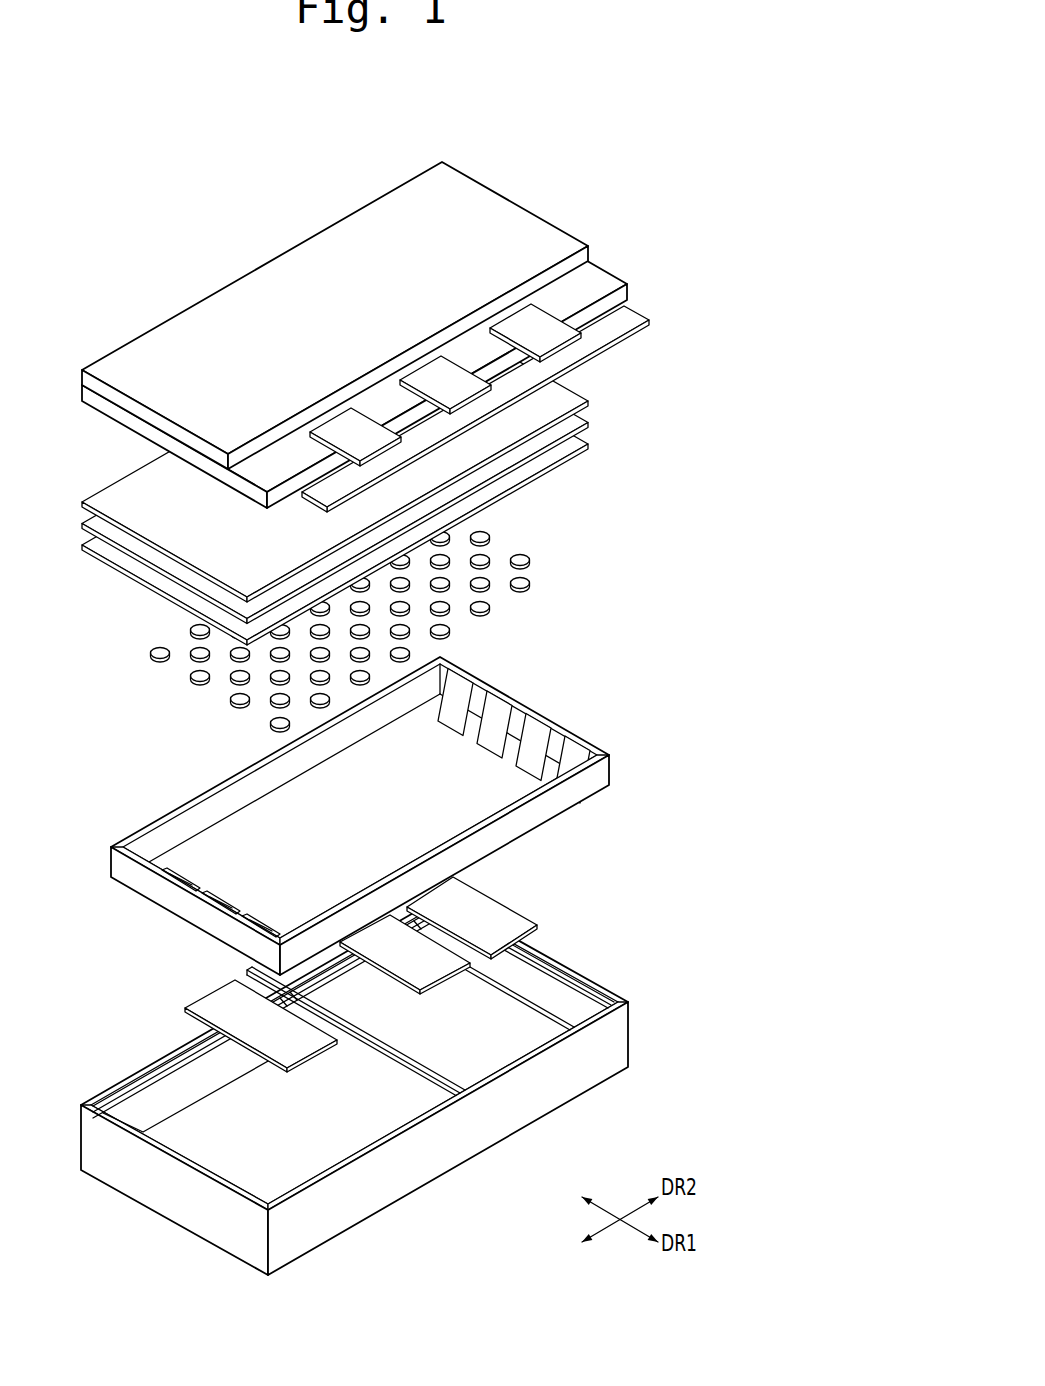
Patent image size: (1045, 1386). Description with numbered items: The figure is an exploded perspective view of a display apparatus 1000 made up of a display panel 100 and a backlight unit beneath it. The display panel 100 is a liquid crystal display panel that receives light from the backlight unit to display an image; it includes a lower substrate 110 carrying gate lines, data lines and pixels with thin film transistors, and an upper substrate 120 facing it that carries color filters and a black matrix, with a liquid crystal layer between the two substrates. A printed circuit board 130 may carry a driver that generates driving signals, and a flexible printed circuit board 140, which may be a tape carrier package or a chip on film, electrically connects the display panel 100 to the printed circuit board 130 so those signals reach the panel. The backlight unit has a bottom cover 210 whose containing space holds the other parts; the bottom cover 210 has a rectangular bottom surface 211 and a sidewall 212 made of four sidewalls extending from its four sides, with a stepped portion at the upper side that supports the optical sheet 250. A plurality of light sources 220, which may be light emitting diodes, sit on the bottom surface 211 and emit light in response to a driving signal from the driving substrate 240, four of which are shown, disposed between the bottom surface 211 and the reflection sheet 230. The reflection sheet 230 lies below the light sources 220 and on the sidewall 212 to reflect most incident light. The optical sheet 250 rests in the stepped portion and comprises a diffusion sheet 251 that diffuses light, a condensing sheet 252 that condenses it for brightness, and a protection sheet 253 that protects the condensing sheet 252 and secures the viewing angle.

The display apparatus 1000 is at (648, 166).
The display panel 100 is at (405, 331).
The lower substrate 110 is at (628, 294).
The upper substrate 120 is at (505, 221).
The printed circuit board 130 is at (650, 322).
The flexible printed circuit board 140 is at (556, 335).
The optical sheet 250 is at (406, 475).
The diffusion sheet 251 is at (588, 446).
The condensing sheet 252 is at (588, 424).
The protection sheet 253 is at (588, 402).
The light source 220 is at (540, 578).
The reflection sheet 230 is at (632, 767).
The driving substrate 240 is at (545, 923).
The bottom cover 210 is at (424, 1084).
The bottom surface 211 is at (525, 1033).
The sidewall 212 is at (628, 1040).